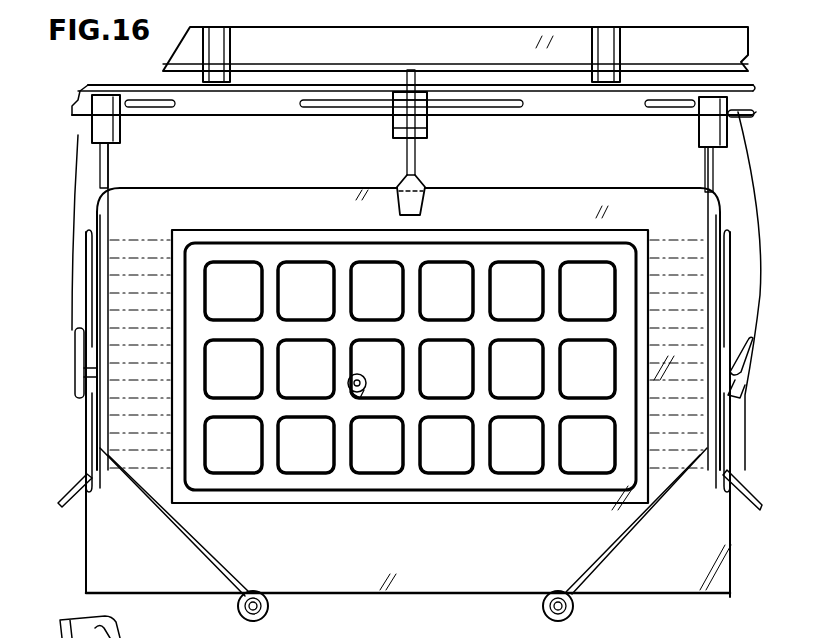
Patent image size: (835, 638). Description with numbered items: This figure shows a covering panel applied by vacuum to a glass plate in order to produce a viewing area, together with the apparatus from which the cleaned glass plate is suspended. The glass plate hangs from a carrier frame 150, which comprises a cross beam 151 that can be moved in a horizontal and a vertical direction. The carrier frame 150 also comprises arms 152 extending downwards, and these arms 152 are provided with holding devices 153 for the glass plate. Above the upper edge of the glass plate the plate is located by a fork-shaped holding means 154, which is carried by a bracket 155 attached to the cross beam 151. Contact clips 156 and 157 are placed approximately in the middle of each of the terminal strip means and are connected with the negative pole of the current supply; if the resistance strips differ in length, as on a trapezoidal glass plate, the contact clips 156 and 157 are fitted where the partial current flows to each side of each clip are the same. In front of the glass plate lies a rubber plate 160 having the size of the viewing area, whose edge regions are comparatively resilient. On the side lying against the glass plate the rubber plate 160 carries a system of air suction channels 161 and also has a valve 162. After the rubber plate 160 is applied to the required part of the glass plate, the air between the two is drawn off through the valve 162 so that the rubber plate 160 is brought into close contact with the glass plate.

The carrier frame 150 is at (258, 45).
The cross beam 151 is at (240, 106).
The arms 152 is at (110, 175).
The holding devices 153 is at (269, 612).
The fork-shaped holding means 154 is at (418, 195).
The bracket 155 is at (395, 113).
The contact clip 156 is at (742, 378).
The contact clip 157 is at (78, 372).
The rubber plate 160 is at (437, 464).
The air suction channels 161 is at (282, 453).
The valve 162 is at (350, 378).